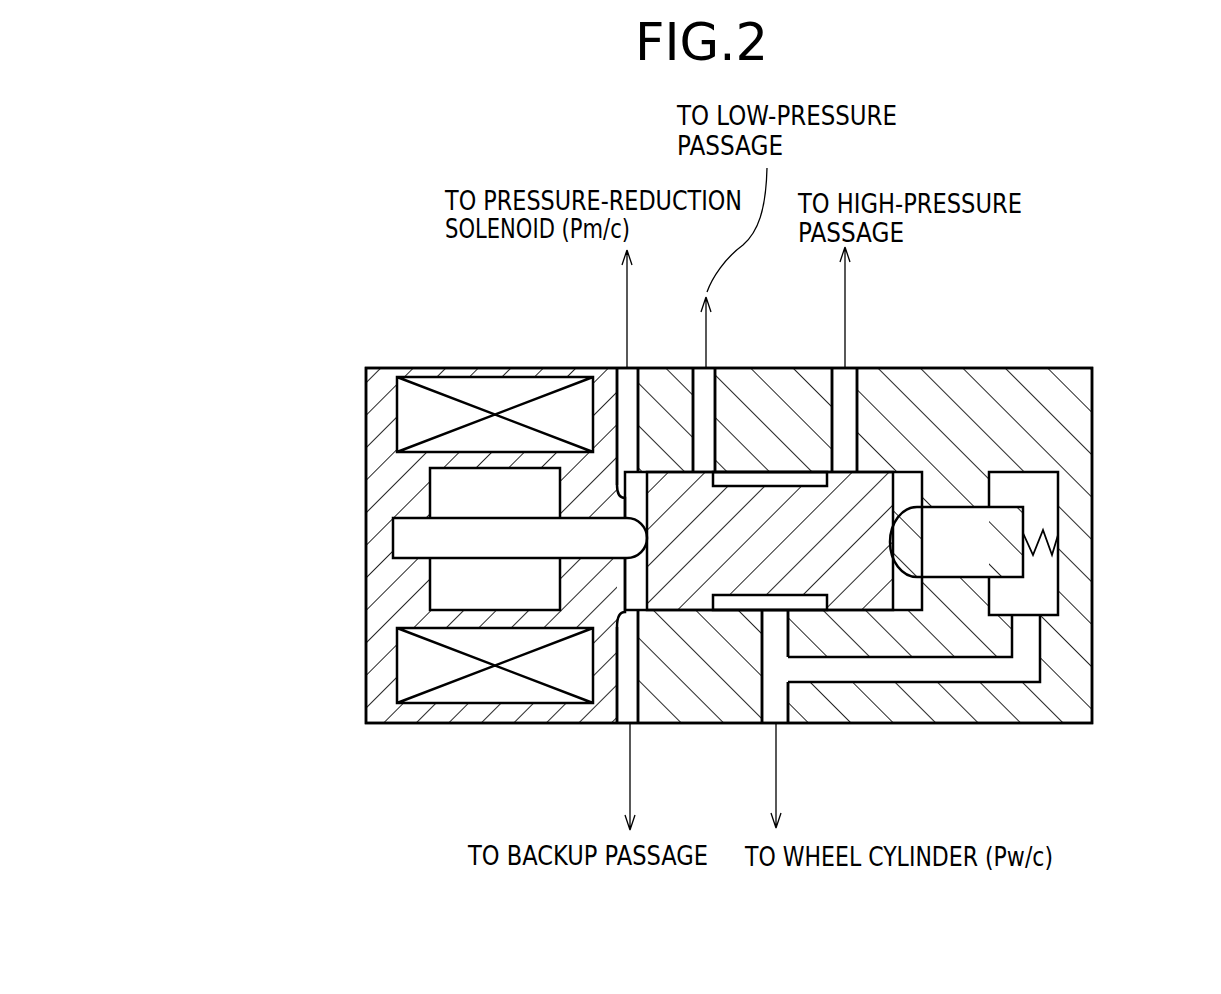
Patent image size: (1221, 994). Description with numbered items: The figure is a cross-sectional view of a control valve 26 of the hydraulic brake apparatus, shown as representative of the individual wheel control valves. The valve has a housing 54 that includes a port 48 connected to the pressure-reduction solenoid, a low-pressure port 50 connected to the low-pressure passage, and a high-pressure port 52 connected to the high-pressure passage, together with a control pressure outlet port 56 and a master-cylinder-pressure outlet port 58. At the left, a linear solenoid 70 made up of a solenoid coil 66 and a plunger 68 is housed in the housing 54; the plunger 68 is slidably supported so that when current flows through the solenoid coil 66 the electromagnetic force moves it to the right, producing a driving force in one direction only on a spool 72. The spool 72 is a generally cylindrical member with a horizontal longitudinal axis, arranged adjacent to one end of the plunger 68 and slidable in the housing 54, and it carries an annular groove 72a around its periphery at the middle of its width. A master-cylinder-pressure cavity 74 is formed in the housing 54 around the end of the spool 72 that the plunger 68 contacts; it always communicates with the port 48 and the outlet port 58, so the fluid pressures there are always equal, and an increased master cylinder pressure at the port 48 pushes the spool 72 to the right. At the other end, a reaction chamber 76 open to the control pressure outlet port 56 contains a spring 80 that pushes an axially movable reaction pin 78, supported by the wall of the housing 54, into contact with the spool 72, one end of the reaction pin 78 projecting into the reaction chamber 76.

The control valve 26 is at (918, 362).
The port 48 is at (623, 367).
The low-pressure port 50 is at (710, 367).
The high-pressure port 52 is at (847, 367).
The housing 54 is at (1065, 433).
The control pressure outlet port 56 is at (780, 703).
The master-cylinder-pressure outlet port 58 is at (632, 703).
The solenoid coil 66 is at (405, 647).
The plunger 68 is at (418, 540).
The linear solenoid 70 is at (437, 576).
The spool 72 is at (770, 645).
The annular groove 72a is at (728, 603).
The master-cylinder-pressure cavity 74 is at (595, 683).
The reaction chamber 76 is at (1052, 488).
The reaction pin 78 is at (1015, 566).
The spring 80 is at (1037, 552).